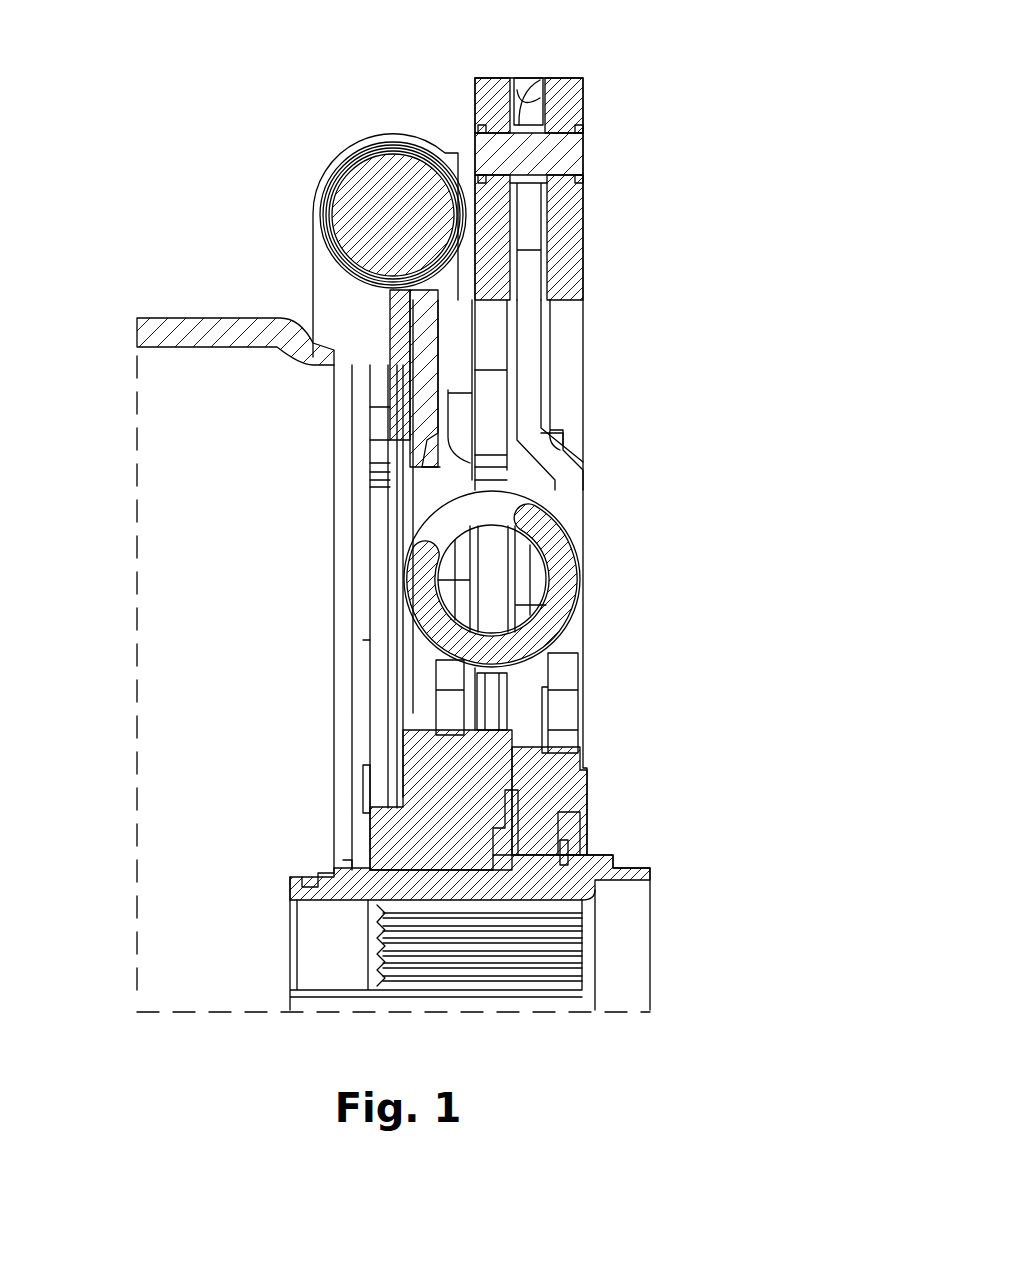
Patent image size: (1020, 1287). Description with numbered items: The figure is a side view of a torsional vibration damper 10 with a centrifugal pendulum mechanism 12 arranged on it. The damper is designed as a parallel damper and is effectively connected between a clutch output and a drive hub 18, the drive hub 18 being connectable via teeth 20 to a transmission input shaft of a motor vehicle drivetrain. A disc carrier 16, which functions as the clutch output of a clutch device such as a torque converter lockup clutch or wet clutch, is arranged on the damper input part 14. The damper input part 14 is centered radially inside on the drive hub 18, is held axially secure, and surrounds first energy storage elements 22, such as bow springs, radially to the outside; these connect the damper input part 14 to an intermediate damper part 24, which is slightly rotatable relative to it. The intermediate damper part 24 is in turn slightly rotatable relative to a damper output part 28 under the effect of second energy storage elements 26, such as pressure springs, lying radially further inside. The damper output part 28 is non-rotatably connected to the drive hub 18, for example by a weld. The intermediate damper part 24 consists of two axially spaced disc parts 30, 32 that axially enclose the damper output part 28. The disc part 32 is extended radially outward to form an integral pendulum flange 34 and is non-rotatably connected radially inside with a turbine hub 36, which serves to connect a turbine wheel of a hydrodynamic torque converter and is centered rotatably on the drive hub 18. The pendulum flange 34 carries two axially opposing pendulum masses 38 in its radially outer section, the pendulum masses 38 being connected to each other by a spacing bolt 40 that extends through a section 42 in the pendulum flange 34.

The torsional vibration damper 10 is at (398, 118).
The centrifugal pendulum mechanism 12 is at (588, 102).
The damper input part 14 is at (318, 208).
The disc carrier 16 is at (190, 338).
The drive hub 18 is at (518, 776).
The teeth 20 is at (598, 942).
The first energy storage elements 22 is at (365, 168).
The intermediate damper part 24 is at (552, 416).
The second energy storage elements 26 is at (582, 578).
The damper output part 28 is at (500, 712).
The disc part 30 is at (548, 343).
The disc part 32 is at (558, 440).
The pendulum flange 34 is at (548, 372).
The turbine hub 36 is at (545, 828).
The pendulum masses 38 is at (572, 242).
The spacing bolt 40 is at (566, 157).
The section 42 is at (520, 120).